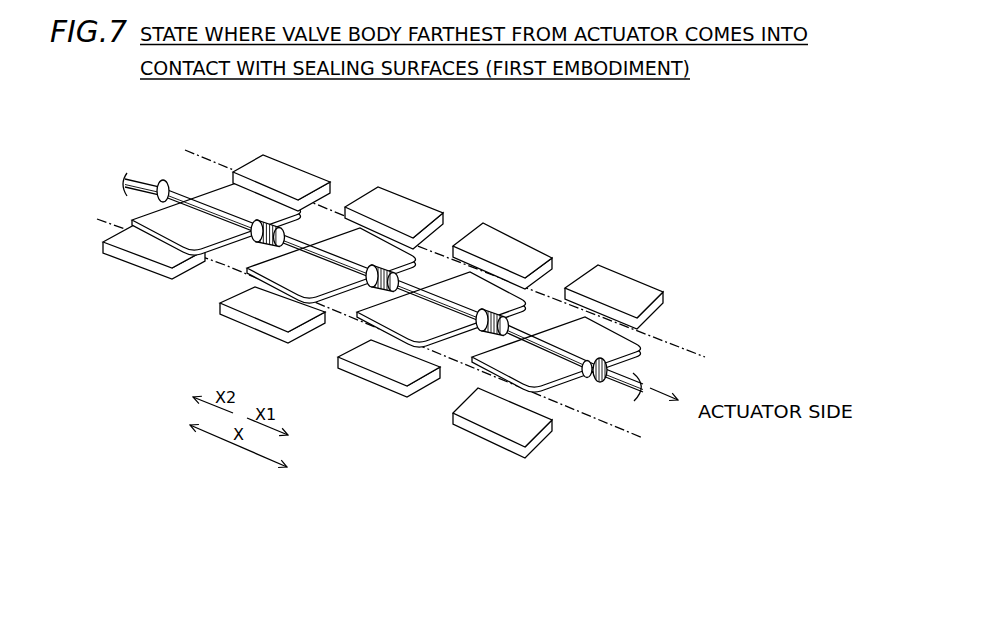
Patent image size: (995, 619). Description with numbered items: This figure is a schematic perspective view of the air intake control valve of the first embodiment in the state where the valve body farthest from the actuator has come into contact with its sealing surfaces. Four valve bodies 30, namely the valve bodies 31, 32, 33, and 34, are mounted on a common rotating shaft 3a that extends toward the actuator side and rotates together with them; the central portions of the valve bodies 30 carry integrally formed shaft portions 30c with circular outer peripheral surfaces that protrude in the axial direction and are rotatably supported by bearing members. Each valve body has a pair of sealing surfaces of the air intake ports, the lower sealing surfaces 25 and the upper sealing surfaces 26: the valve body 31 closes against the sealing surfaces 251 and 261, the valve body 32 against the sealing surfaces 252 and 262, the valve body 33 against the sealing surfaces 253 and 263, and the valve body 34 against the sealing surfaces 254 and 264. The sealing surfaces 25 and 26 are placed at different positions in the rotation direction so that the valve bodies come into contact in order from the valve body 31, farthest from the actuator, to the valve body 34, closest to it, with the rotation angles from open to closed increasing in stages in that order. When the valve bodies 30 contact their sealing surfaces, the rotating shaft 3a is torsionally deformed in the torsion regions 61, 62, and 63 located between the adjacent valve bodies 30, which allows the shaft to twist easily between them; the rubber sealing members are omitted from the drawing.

The rotating shaft 3a is at (621, 386).
The sealing surfaces 25 is at (303, 341).
The sealing surface 251 is at (110, 233).
The sealing surface 252 is at (224, 292).
The sealing surface 253 is at (342, 348).
The sealing surface 254 is at (466, 398).
The sealing surfaces 26 is at (478, 226).
The sealing surface 261 is at (331, 185).
The sealing surface 262 is at (446, 216).
The sealing surface 263 is at (556, 261).
The sealing surface 264 is at (665, 304).
The valve bodies 30 is at (395, 252).
The shaft portions 30c is at (152, 183).
The valve body 31 is at (232, 190).
The valve body 32 is at (358, 240).
The valve body 33 is at (465, 283).
The valve body 34 is at (578, 327).
The torsion region 61 is at (243, 255).
The torsion region 62 is at (356, 301).
The torsion region 63 is at (463, 348).